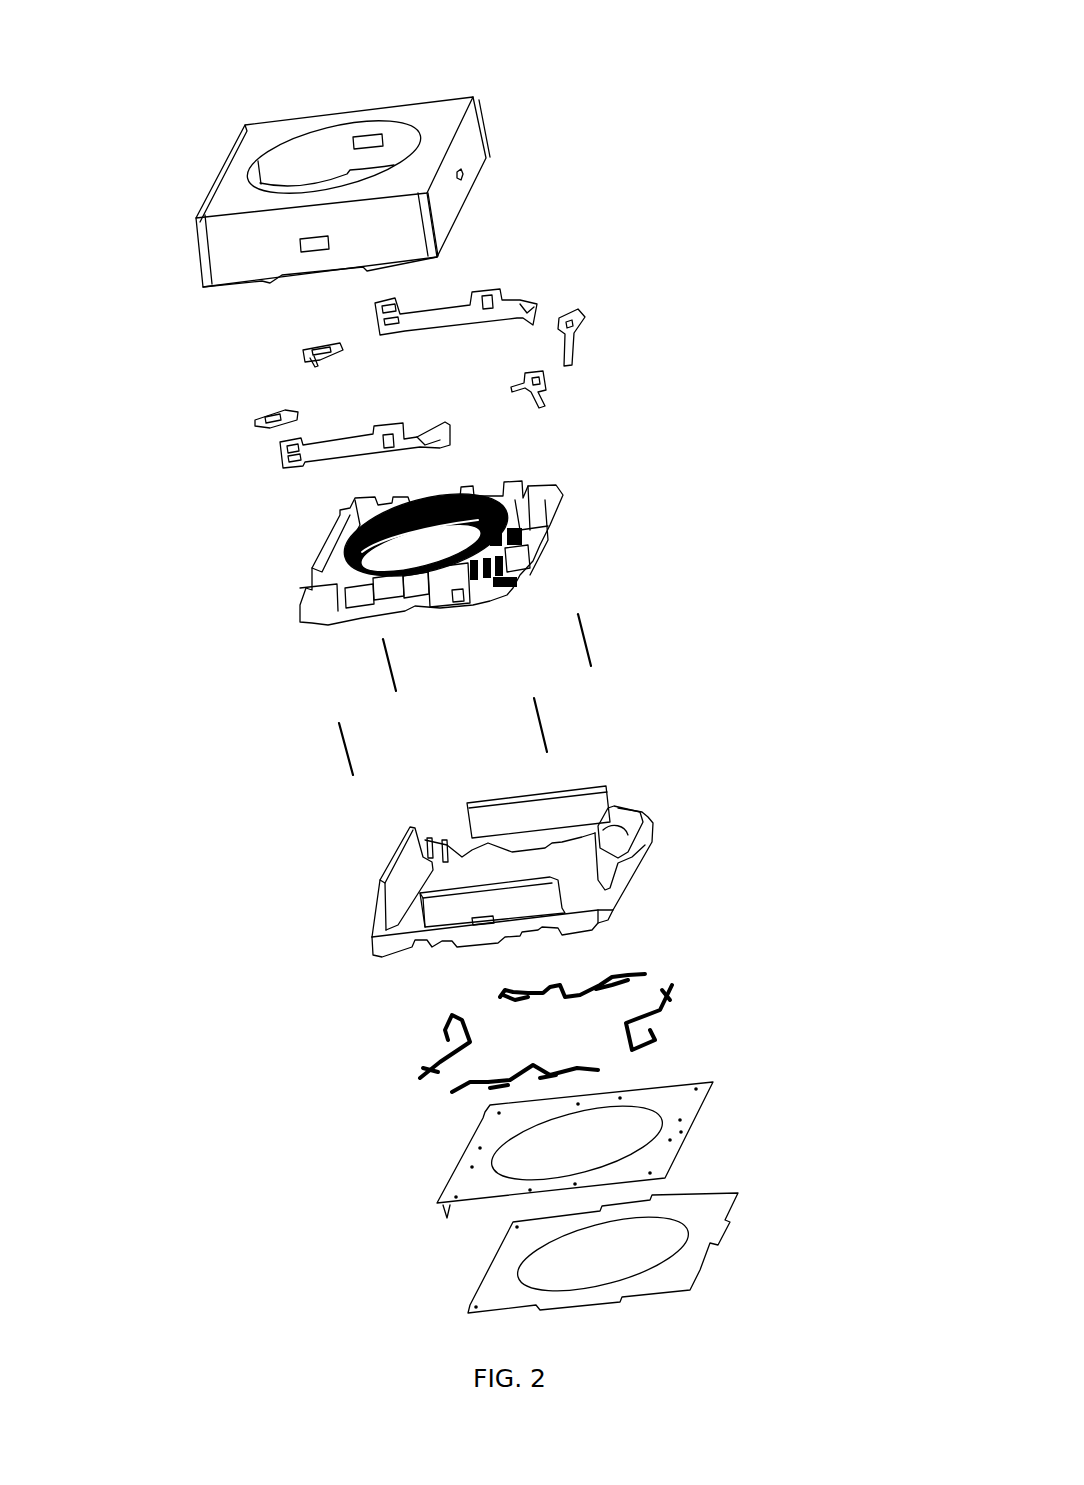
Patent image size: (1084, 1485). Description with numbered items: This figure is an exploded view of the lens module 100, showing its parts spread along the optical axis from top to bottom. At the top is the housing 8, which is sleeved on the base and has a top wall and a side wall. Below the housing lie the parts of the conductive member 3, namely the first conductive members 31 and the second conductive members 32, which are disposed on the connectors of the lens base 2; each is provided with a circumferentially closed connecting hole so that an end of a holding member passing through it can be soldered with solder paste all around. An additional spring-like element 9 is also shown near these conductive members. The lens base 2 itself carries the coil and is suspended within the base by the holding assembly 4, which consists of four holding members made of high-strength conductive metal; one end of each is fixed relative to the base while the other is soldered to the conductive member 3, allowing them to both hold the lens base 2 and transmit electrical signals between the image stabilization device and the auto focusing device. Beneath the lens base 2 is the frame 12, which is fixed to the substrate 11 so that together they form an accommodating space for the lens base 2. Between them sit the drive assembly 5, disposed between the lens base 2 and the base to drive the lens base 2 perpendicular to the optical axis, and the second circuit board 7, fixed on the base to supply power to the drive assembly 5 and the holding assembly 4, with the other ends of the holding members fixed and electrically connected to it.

The lens module 100 is at (495, 47).
The housing 8 is at (472, 143).
The conductive member 3 is at (509, 310).
The second conductive member 32 is at (308, 343).
The first conductive member 31 is at (598, 344).
The upper spring 9 is at (282, 455).
The lens base 2 is at (560, 518).
The holding assembly 4 is at (587, 642).
The frame 12 is at (655, 823).
The drive assembly 5 is at (680, 990).
The second circuit board 7 is at (700, 1115).
The substrate 11 is at (703, 1230).